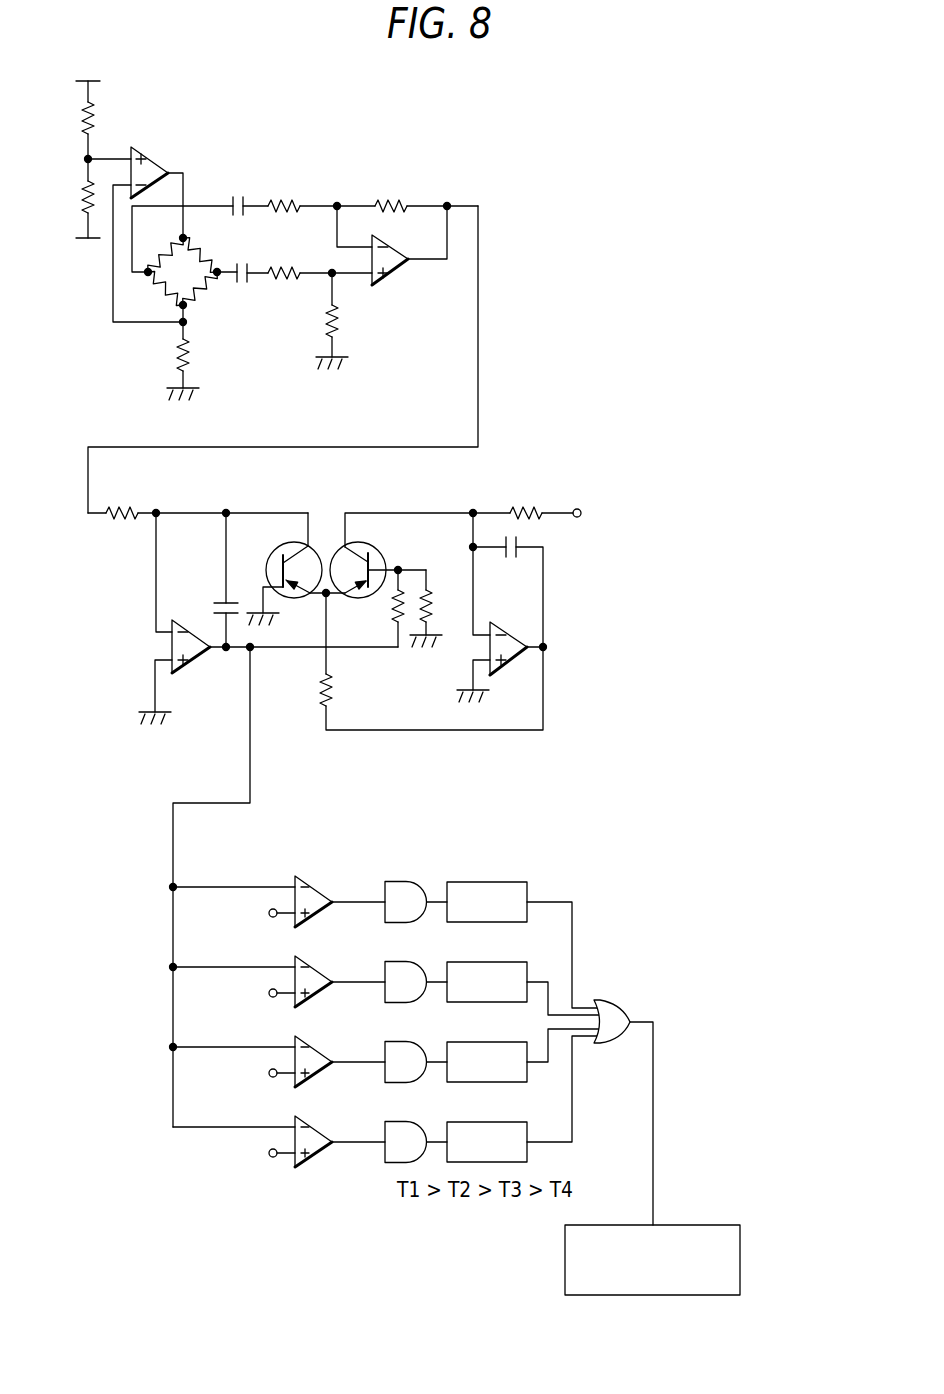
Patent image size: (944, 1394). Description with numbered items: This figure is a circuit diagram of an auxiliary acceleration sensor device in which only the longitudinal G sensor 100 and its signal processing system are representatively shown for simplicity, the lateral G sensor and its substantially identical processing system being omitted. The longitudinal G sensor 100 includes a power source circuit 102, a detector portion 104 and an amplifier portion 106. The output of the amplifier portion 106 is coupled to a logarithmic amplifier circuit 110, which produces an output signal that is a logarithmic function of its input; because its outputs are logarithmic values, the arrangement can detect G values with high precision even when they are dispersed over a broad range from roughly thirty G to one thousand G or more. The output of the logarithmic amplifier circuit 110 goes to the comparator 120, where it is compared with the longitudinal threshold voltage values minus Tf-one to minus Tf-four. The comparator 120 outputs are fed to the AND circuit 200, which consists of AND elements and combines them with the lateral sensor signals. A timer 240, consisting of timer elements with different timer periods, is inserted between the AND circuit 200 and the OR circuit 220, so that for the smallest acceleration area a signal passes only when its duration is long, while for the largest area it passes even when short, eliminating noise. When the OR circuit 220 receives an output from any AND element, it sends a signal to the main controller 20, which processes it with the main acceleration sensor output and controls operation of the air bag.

The longitudinal G sensor 100 is at (497, 162).
The power source circuit 102 is at (160, 163).
The detector portion 104 is at (185, 257).
The amplifier portion 106 is at (447, 173).
The logarithmic amplifier circuit 110 is at (685, 485).
The comparator 120 is at (321, 874).
The AND circuit 200 is at (402, 993).
The timer 240 is at (506, 863).
The OR circuit 220 is at (603, 1067).
The main controller 20 is at (565, 1260).